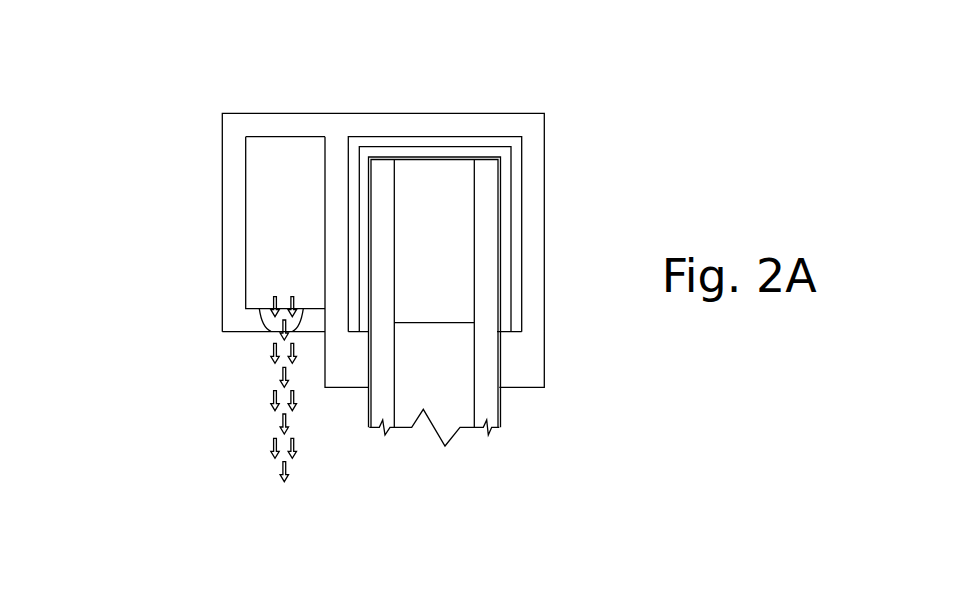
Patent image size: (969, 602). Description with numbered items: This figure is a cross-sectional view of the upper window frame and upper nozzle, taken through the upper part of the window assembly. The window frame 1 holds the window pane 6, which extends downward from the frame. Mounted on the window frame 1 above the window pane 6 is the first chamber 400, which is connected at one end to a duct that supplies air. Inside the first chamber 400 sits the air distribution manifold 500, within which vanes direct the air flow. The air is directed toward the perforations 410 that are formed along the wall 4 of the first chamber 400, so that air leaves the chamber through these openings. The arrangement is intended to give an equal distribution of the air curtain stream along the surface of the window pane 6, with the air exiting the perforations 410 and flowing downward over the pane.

The window frame 1 is at (535, 198).
The wall 4 is at (253, 324).
The window pane 6 is at (438, 377).
The first chamber 400 is at (232, 234).
The perforations 410 is at (275, 326).
The air distribution manifold 500 is at (277, 167).